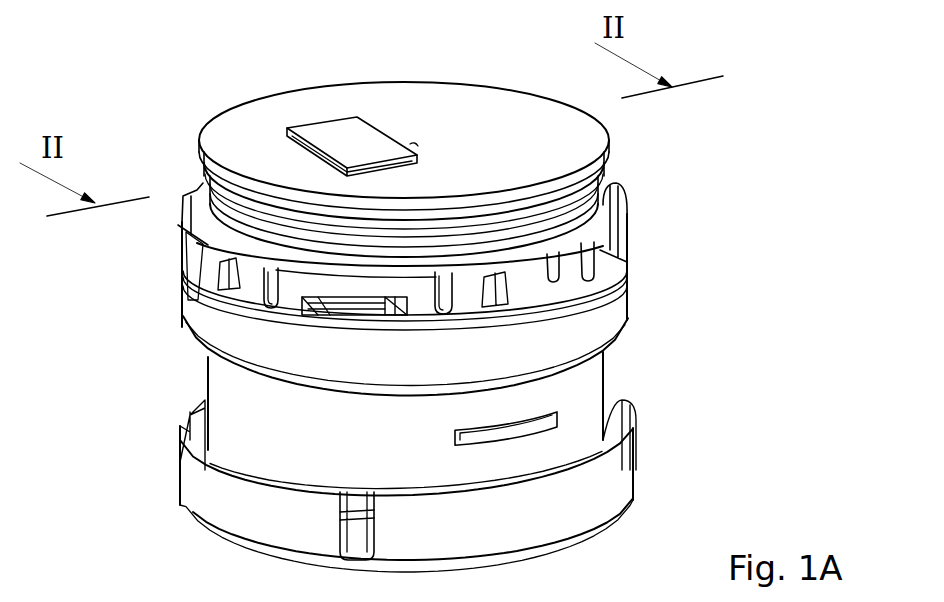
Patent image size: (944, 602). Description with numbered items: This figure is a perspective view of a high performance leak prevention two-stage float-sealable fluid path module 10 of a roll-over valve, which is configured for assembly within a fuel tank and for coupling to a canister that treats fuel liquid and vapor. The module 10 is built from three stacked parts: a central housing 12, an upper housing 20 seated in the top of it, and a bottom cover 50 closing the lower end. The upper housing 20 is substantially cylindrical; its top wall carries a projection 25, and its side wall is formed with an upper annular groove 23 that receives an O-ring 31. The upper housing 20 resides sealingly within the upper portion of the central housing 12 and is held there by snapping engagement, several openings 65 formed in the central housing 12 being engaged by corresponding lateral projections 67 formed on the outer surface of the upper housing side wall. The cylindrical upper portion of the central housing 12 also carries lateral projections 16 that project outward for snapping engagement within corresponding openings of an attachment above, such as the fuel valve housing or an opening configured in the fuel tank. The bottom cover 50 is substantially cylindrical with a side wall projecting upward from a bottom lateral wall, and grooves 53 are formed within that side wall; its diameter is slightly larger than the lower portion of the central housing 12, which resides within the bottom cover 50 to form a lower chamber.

The float-sealable fluid path module 10 is at (227, 81).
The upper housing 20 is at (419, 101).
The projection 25 is at (370, 152).
The upper annular groove 23 is at (583, 178).
The O-ring 31 is at (538, 207).
The central housing 12 is at (614, 313).
The lateral projections 16 is at (604, 358).
The openings 65 is at (303, 303).
The lateral projections 67 is at (395, 310).
The bottom cover 50 is at (548, 522).
The grooves 53 is at (355, 538).